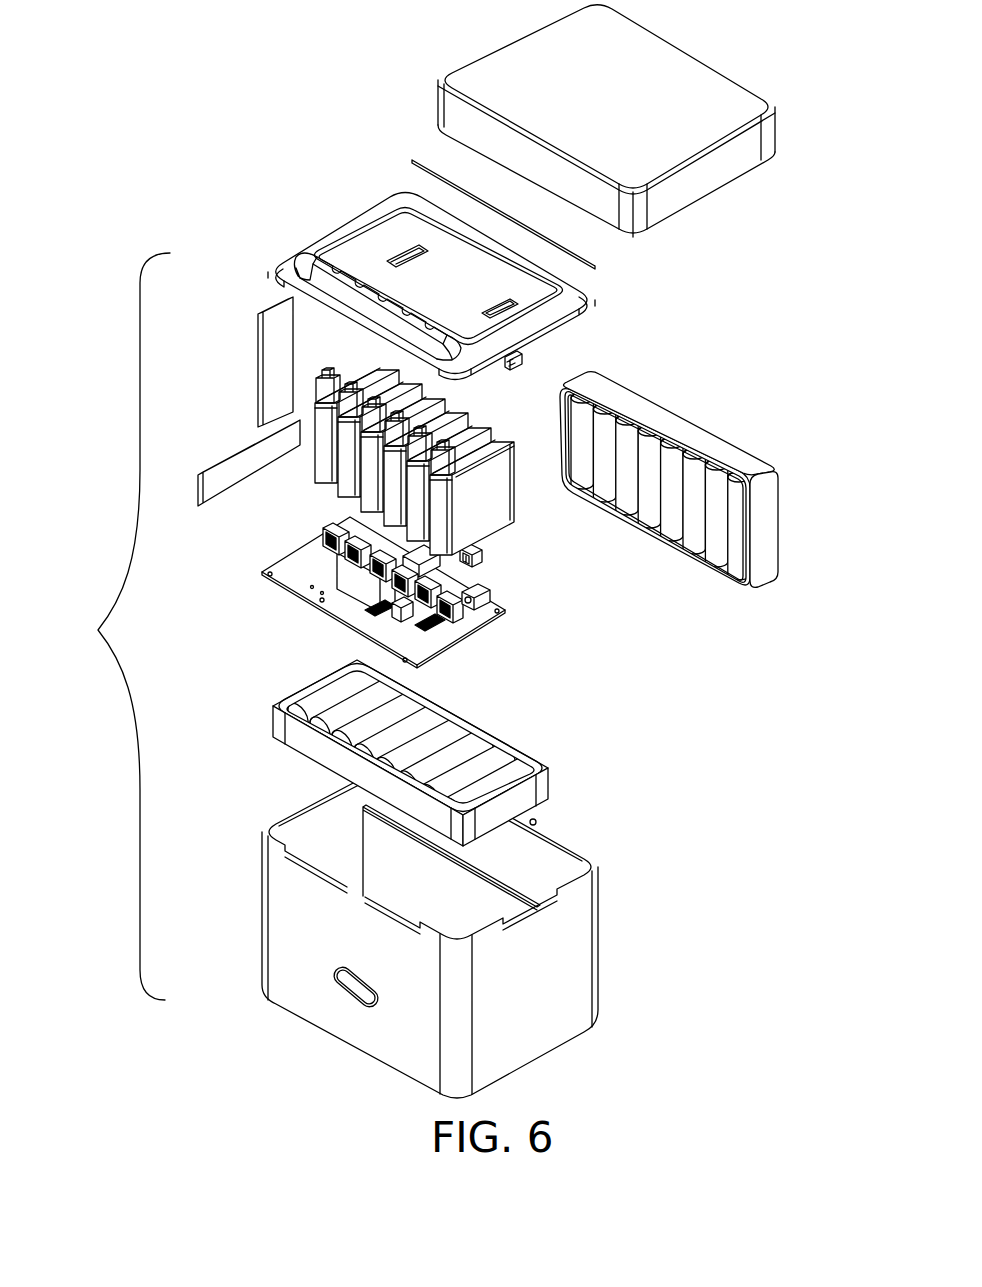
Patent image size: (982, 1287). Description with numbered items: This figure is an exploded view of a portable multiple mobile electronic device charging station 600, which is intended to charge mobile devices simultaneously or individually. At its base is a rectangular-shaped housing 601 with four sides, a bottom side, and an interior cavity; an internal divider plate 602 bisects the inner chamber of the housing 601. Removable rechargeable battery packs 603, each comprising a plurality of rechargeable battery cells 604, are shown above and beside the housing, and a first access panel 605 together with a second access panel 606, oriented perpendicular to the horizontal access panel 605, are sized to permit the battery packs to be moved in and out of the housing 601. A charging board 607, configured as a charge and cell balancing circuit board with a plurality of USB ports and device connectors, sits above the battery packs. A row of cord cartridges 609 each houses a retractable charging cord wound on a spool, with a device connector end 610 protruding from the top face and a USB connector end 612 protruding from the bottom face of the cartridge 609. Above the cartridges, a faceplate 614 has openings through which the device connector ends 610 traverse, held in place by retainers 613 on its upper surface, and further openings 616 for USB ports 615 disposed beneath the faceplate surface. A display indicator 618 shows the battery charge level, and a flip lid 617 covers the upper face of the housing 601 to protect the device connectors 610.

The portable multiple mobile electronic device charging station 600 is at (111, 626).
The housing 601 is at (598, 970).
The internal divider plate 602 is at (453, 902).
The removable rechargeable battery pack 603 is at (546, 609).
The rechargeable battery cells 604 is at (702, 538).
The first access panel 605 is at (233, 497).
The second access panel 606 is at (260, 383).
The charging board 607 is at (480, 623).
The cord cartridge 609 is at (492, 442).
The device connector end 610 is at (320, 373).
The USB connector end 612 is at (477, 560).
The retainer 613 is at (450, 462).
The faceplate 614 is at (483, 250).
The USB port 615 is at (510, 367).
The opening 616 is at (405, 247).
The flip lid 617 is at (698, 60).
The display indicator 618 is at (353, 983).